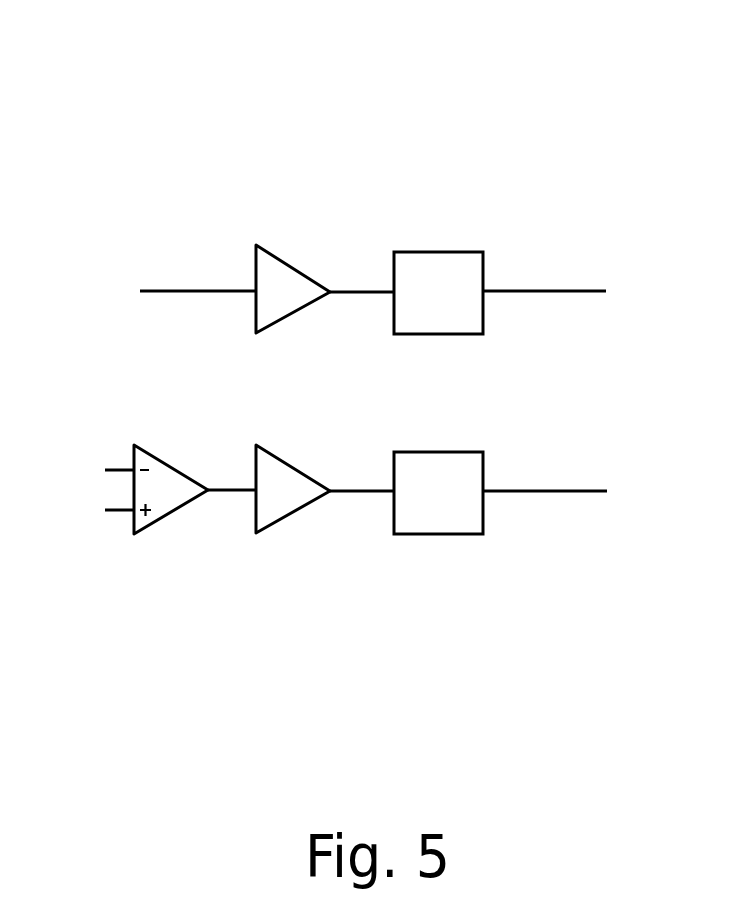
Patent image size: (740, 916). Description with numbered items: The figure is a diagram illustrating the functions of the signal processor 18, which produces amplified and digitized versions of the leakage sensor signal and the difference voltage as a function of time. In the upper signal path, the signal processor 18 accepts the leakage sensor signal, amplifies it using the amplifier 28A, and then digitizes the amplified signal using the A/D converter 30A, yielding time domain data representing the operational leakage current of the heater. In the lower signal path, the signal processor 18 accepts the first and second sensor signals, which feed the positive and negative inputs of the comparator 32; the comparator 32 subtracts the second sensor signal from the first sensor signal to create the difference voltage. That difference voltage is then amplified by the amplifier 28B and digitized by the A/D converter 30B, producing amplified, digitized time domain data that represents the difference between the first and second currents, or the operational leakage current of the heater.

The signal processor 18 is at (142, 113).
The amplifier 28A is at (282, 283).
The amplifier 28B is at (282, 482).
The A/D converter 30A is at (438, 250).
The A/D converter 30B is at (438, 450).
The comparator 32 is at (168, 492).